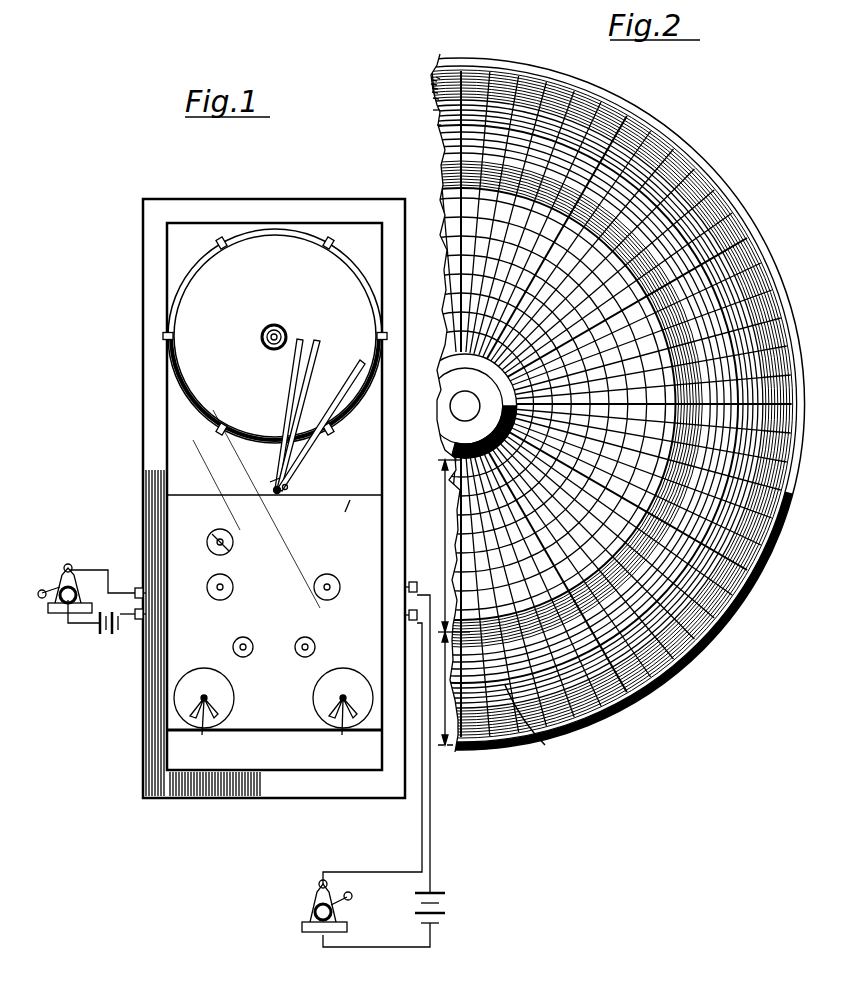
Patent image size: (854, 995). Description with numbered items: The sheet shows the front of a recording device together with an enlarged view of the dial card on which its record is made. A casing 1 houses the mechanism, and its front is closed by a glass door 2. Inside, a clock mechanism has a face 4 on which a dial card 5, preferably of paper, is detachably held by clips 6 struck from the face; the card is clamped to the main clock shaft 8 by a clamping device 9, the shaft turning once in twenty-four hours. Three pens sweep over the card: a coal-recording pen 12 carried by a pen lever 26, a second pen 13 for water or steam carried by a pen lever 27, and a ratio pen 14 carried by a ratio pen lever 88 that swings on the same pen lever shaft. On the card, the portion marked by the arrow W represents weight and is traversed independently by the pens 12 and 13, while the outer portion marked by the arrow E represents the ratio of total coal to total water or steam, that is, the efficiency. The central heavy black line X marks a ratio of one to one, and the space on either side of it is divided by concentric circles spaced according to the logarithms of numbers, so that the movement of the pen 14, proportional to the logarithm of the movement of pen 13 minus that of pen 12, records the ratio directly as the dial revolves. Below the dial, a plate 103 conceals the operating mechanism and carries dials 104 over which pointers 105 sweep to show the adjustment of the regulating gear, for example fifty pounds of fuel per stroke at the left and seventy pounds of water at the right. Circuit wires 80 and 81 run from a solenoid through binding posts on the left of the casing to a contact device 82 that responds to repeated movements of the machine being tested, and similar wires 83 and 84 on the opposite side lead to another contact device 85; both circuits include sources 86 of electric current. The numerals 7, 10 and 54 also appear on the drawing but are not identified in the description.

In FIG. 2, the casing 1 is at (438, 125).
In FIG. 2, the glass door 2 is at (434, 110).
In FIG. 1, the face 4 is at (190, 354).
In FIG. 2, the face 4 is at (434, 99).
In FIG. 2, the dial card 5 is at (680, 147).
In FIG. 1, the clips 6 is at (228, 246).
In FIG. 2, the clips 6 is at (433, 93).
In FIG. 1, the instrument case 7 is at (178, 420).
In FIG. 1, the main clock shaft 8 is at (270, 326).
In FIG. 2, the main clock shaft 8 is at (433, 89).
In FIG. 1, the clamping device 9 is at (280, 332).
In FIG. 2, the chart line 10 is at (432, 85).
In FIG. 1, the coal-recording pen 12 is at (293, 387).
In FIG. 2, the coal-recording pen 12 is at (436, 78).
In FIG. 1, the second pen 13 is at (310, 371).
In FIG. 1, the ratio pen 14 is at (346, 396).
In FIG. 2, the ratio pen 14 is at (433, 81).
In FIG. 1, the pen lever 26 is at (273, 482).
In FIG. 1, the pen lever 27 is at (273, 490).
In FIG. 1, the gauge needle 54 is at (273, 706).
In FIG. 1, the circuit wire 80 is at (106, 568).
In FIG. 1, the circuit wire 81 is at (84, 624).
In FIG. 1, the contact device 82 is at (58, 610).
In FIG. 1, the wire 83 is at (431, 812).
In FIG. 1, the wire 84 is at (421, 831).
In FIG. 1, the contact device 85 is at (312, 911).
In FIG. 1, the sources of electric current 86 is at (106, 636).
In FIG. 1, the ratio pen lever 88 is at (289, 488).
In FIG. 1, the plate 103 is at (356, 497).
In FIG. 1, the dials 104 is at (224, 690).
In FIG. 1, the pointers 105 is at (277, 725).
In FIG. 2, the weight portion arrow W is at (444, 522).
In FIG. 2, the efficiency portion arrow E is at (454, 688).
In FIG. 2, the central heavy black line X is at (547, 748).